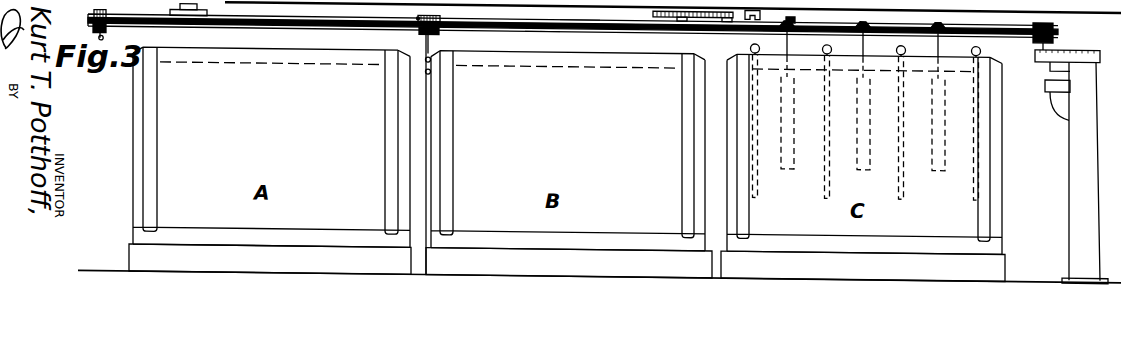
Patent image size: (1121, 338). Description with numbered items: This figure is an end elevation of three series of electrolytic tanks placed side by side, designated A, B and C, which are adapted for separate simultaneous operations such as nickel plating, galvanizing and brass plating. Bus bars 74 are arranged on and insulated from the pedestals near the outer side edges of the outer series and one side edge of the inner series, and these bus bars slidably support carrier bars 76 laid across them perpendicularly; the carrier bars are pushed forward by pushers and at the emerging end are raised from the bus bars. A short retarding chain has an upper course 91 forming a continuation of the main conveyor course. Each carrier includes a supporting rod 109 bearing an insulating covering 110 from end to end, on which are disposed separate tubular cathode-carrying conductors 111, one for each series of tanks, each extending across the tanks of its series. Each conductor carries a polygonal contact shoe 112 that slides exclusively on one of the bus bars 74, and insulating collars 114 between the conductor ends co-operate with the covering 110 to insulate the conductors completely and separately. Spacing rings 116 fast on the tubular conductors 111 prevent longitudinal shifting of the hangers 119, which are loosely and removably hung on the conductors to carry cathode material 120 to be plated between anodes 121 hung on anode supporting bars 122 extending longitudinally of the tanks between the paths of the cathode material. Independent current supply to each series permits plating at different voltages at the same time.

The bus bar 74 is at (106, 31).
The carrier bar 76 is at (638, 32).
The upper course of short chain 91 is at (652, 9).
The supporting rod 109 is at (578, 27).
The insulating covering 110 is at (550, 27).
The tubular cathode-carrying conductor 111 is at (536, 27).
The polygonal contact shoe 112 is at (101, 17).
The insulating collar 114 is at (417, 15).
The spacing ring 116 is at (806, 12).
The hanger 119 is at (794, 27).
The cathode material 120 is at (792, 94).
The anode 121 is at (823, 178).
The anode supporting bar 122 is at (750, 41).